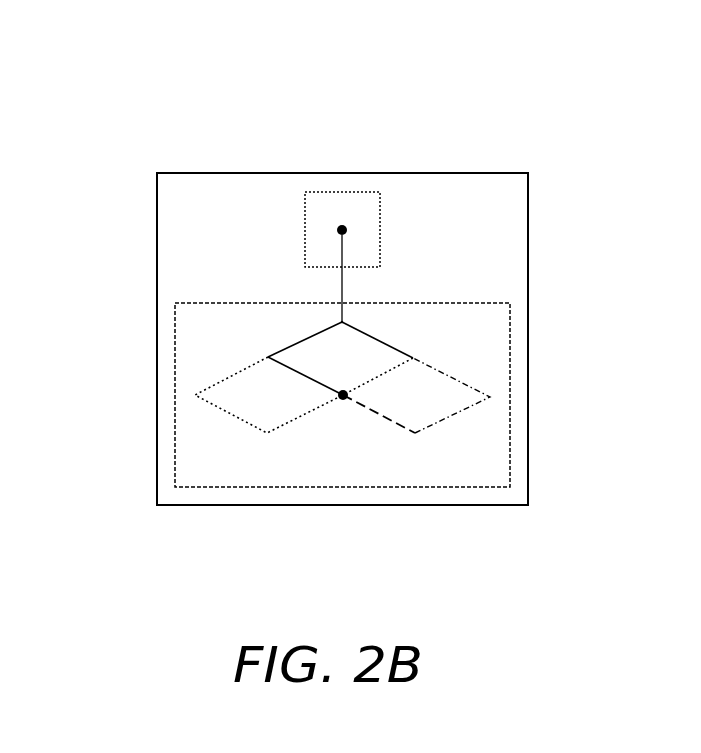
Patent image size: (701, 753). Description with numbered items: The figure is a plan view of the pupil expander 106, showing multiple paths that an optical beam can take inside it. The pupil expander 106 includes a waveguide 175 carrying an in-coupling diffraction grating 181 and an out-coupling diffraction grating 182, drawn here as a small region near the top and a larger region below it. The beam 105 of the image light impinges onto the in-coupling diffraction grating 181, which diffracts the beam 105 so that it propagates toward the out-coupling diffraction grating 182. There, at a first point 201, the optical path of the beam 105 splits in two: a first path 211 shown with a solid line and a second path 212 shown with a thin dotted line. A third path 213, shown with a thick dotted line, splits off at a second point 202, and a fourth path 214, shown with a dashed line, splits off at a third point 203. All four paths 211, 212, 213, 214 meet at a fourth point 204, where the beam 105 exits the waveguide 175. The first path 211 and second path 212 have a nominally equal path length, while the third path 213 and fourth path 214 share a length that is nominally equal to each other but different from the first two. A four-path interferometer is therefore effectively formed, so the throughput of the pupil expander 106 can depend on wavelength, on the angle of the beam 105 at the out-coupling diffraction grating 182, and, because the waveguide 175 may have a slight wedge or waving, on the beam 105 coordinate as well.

The pupil expander 106 is at (407, 138).
The waveguide 175 is at (528, 203).
The in-coupling diffraction grating 181 is at (332, 192).
The out-coupling diffraction grating 182 is at (360, 471).
The beam 105 is at (347, 230).
The first point 201 is at (342, 322).
The second point 202 is at (266, 356).
The third point 203 is at (413, 358).
The fourth point 204 is at (347, 398).
The first path 211 is at (297, 345).
The second path 212 is at (380, 342).
The third path 213 is at (230, 413).
The fourth path 214 is at (466, 410).